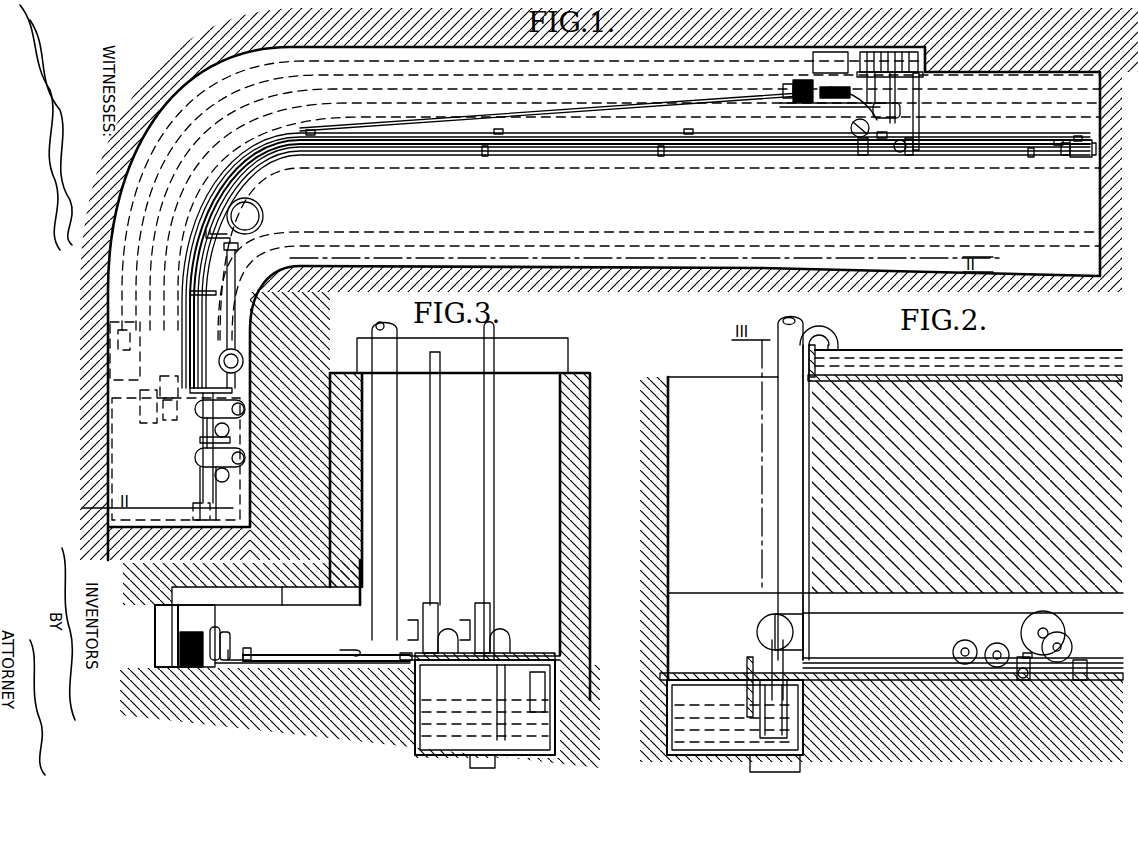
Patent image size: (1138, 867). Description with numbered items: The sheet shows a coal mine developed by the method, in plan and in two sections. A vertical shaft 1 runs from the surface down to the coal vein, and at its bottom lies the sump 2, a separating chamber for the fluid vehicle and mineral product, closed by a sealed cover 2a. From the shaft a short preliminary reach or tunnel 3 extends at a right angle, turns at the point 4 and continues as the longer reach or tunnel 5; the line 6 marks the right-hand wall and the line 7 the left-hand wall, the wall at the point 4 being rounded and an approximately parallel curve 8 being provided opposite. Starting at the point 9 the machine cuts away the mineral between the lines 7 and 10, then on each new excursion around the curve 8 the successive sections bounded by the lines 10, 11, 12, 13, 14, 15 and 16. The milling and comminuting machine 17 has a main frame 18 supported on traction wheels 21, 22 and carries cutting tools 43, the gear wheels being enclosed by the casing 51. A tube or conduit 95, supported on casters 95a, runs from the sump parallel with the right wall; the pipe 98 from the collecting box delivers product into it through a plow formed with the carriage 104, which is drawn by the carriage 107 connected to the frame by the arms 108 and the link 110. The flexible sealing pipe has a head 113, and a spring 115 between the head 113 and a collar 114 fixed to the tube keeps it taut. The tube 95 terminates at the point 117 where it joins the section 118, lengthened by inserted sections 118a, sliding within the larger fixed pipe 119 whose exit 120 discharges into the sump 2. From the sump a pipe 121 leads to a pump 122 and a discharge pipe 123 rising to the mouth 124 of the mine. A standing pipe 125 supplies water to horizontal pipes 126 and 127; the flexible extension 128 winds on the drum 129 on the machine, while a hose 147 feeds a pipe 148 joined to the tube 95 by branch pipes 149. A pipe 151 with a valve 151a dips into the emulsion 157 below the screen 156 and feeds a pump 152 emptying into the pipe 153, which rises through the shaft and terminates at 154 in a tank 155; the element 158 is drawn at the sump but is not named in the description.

In FIG. 1, the vertical shaft 1 is at (173, 530).
In FIG. 3, the vertical shaft 1 is at (534, 468).
In FIG. 2, the vertical shaft 1 is at (716, 471).
In FIG. 1, the sump 2 is at (110, 430).
In FIG. 3, the sump 2 is at (420, 720).
In FIG. 2, the sealed cover 2a is at (722, 673).
In FIG. 1, the short reach or tunnel 3 is at (155, 386).
In FIG. 3, the short reach or tunnel 3 is at (313, 600).
In FIG. 1, the turning point 4 is at (280, 290).
In FIG. 1, the longer reach or tunnel 5 is at (558, 196).
In FIG. 3, the longer reach or tunnel 5 is at (266, 587).
In FIG. 2, the longer reach or tunnel 5 is at (1098, 621).
In FIG. 1, the right hand wall 6 is at (643, 278).
In FIG. 1, the left hand wall 7 is at (677, 168).
In FIG. 1, the curve 8 is at (182, 205).
In FIG. 1, the starting point 9 is at (107, 320).
In FIG. 1, the section line 10 is at (100, 240).
In FIG. 1, the section line 11 is at (118, 217).
In FIG. 1, the section line 12 is at (117, 190).
In FIG. 1, the section line 13 is at (128, 167).
In FIG. 1, the section line 14 is at (152, 153).
In FIG. 1, the section line 15 is at (172, 110).
In FIG. 1, the section line 16 is at (230, 55).
In FIG. 1, the milling and comminuting machine 17 is at (905, 98).
In FIG. 1, the main frame 18 is at (820, 80).
In FIG. 1, the traction wheel 21 is at (830, 58).
In FIG. 3, the traction wheel 21 is at (167, 657).
In FIG. 1, the traction wheel 22 is at (833, 110).
In FIG. 3, the traction wheel 22 is at (210, 667).
In FIG. 2, the traction wheel 22 is at (993, 667).
In FIG. 1, the cutting tools 43 is at (907, 60).
In FIG. 1, the casing 51 is at (880, 72).
In FIG. 2, the casing 51 is at (1021, 632).
In FIG. 1, the tube or conduit 95 is at (435, 143).
In FIG. 3, the tube or conduit 95 is at (313, 670).
In FIG. 2, the tube or conduit 95 is at (920, 673).
In FIG. 1, the rollers or casters 95a is at (310, 132).
In FIG. 2, the rollers or casters 95a is at (1027, 677).
In FIG. 1, the pipe 98 is at (857, 128).
In FIG. 3, the pipe 98 is at (233, 653).
In FIG. 1, the carriage 104 is at (868, 153).
In FIG. 3, the carriage 104 is at (255, 653).
In FIG. 2, the carriage 104 is at (1030, 672).
In FIG. 1, the carriage 107 is at (908, 157).
In FIG. 2, the carriage 107 is at (1078, 682).
In FIG. 1, the laterally extending arms 108 is at (919, 125).
In FIG. 1, the link 110 is at (897, 155).
In FIG. 2, the link 110 is at (1073, 650).
In FIG. 1, the head 113 is at (1082, 157).
In FIG. 1, the collar 114 is at (1067, 160).
In FIG. 1, the spring 115 is at (1082, 147).
In FIG. 3, the connection point 117 is at (377, 683).
In FIG. 3, the section 118 is at (520, 657).
In FIG. 2, the section 118 is at (758, 660).
In FIG. 1, the inserted sections 118a is at (165, 386).
In FIG. 1, the inclosing pipe 119 is at (216, 493).
In FIG. 3, the inclosing pipe 119 is at (480, 650).
In FIG. 2, the inclosing pipe 119 is at (803, 660).
In FIG. 1, the exit 120 is at (213, 517).
In FIG. 3, the exit 120 is at (553, 678).
In FIG. 2, the exit 120 is at (807, 693).
In FIG. 1, the pipe 121 is at (247, 438).
In FIG. 3, the pipe 121 is at (440, 677).
In FIG. 1, the pump 122 is at (213, 407).
In FIG. 3, the pump 122 is at (435, 617).
In FIG. 1, the discharge pipe 123 is at (247, 417).
In FIG. 3, the discharge pipe 123 is at (460, 490).
In FIG. 3, the mouth of the mine 124 is at (547, 385).
In FIG. 1, the standing pipe 125 is at (247, 367).
In FIG. 3, the standing pipe 125 is at (383, 457).
In FIG. 2, the standing pipe 125 is at (780, 520).
In FIG. 1, the horizontal pipe 126 is at (245, 415).
In FIG. 3, the horizontal pipe 126 is at (387, 643).
In FIG. 1, the horizontal pipe 127 is at (233, 313).
In FIG. 1, the flexible pipe 128 is at (593, 107).
In FIG. 3, the flexible pipe 128 is at (237, 667).
In FIG. 1, the drum 129 is at (797, 90).
In FIG. 3, the drum 129 is at (180, 660).
In FIG. 1, the flexible hose 147 is at (262, 212).
In FIG. 3, the flexible hose 147 is at (353, 650).
In FIG. 1, the pipe 148 is at (395, 158).
In FIG. 2, the pipe 148 is at (907, 660).
In FIG. 1, the branch pipes 149 is at (485, 150).
In FIG. 1, the pipe 151 is at (213, 482).
In FIG. 3, the pipe 151 is at (550, 720).
In FIG. 2, the pipe 151 is at (803, 713).
In FIG. 3, the valve 151a is at (473, 756).
In FIG. 1, the pump 152 is at (200, 460).
In FIG. 3, the pump 152 is at (493, 577).
In FIG. 2, the pump 152 is at (803, 625).
In FIG. 1, the pipe 153 is at (240, 457).
In FIG. 3, the pipe 153 is at (488, 513).
In FIG. 2, the pipe 153 is at (793, 567).
In FIG. 2, the terminal 154 is at (838, 343).
In FIG. 2, the tank 155 is at (1017, 357).
In FIG. 3, the screen 156 is at (485, 715).
In FIG. 2, the screen 156 is at (735, 726).
In FIG. 3, the emulsion 157 is at (420, 733).
In FIG. 3, the tank bottom 158 is at (560, 747).